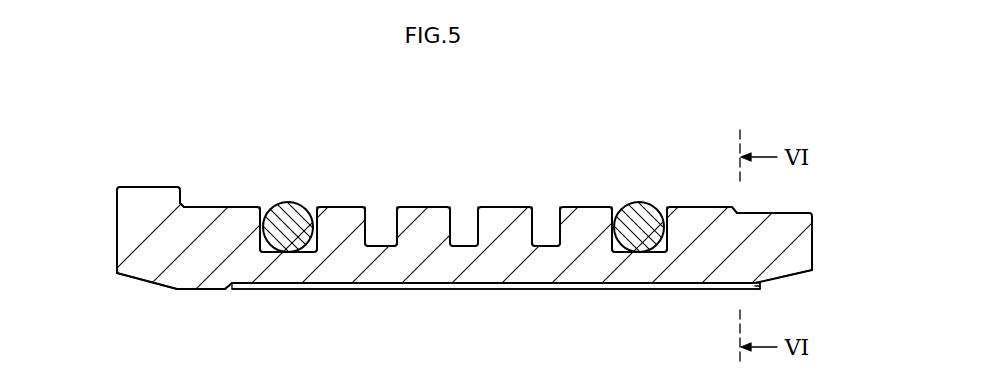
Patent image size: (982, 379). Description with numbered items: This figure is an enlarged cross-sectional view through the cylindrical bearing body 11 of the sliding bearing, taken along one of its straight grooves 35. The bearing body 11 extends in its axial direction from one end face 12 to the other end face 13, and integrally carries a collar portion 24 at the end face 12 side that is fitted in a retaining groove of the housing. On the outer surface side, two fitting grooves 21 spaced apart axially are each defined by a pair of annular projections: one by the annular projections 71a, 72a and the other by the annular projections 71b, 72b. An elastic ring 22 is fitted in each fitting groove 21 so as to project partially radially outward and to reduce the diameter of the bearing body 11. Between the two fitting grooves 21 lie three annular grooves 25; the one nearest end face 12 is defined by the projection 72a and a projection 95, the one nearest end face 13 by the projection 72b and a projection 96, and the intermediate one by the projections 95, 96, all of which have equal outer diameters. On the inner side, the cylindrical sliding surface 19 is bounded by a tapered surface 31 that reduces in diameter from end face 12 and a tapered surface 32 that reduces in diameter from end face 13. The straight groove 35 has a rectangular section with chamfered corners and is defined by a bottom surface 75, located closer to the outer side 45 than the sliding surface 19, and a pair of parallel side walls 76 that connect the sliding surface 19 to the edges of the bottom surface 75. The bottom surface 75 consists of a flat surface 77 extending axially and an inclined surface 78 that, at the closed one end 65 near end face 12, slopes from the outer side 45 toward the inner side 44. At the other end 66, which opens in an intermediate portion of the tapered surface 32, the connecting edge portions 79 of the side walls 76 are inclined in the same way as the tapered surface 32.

The bearing body 11 is at (124, 187).
The end face 12 is at (117, 238).
The end face 13 is at (812, 242).
The collar portion 24 is at (140, 205).
The annular projection 71a is at (217, 212).
The annular projection 71b is at (688, 208).
The annular projection 72a is at (342, 208).
The annular projection 72b is at (593, 210).
The fitting groove 21 is at (290, 210).
The elastic ring 22 is at (268, 208).
The annular groove 25 is at (380, 214).
The projection 95 is at (420, 210).
The projection 96 is at (505, 210).
The outer side 45 is at (712, 207).
The tapered surface 31 is at (142, 282).
The one end 65 is at (231, 288).
The inclined surface 78 is at (228, 290).
The straight groove 35 is at (330, 284).
The side wall 76 is at (397, 284).
The bottom surface 75 is at (450, 284).
The flat surface 77 is at (510, 284).
The sliding surface 19 is at (572, 289).
The inner side 44 is at (633, 289).
The tapered surface 32 is at (790, 277).
The connecting edge portion 79 is at (758, 289).
The other end 66 is at (763, 287).